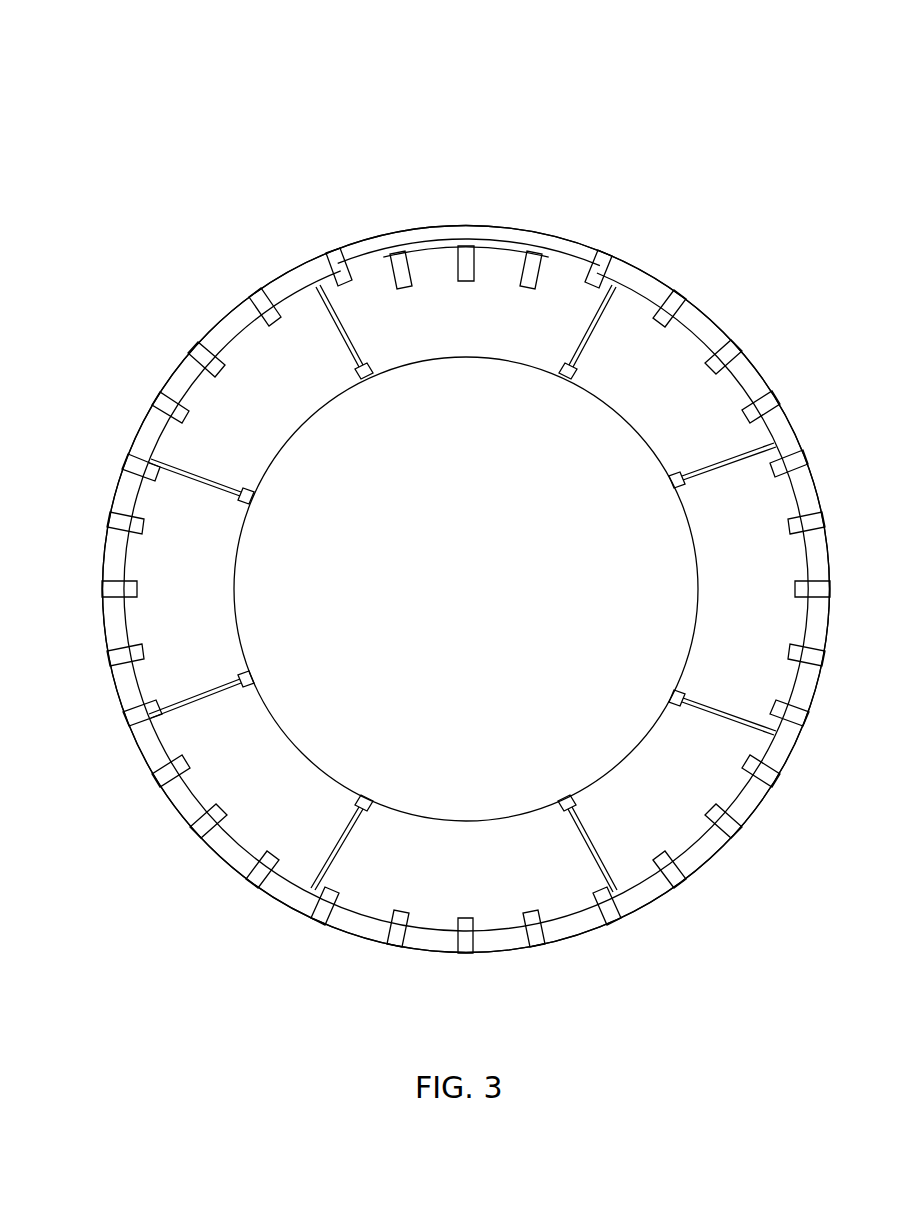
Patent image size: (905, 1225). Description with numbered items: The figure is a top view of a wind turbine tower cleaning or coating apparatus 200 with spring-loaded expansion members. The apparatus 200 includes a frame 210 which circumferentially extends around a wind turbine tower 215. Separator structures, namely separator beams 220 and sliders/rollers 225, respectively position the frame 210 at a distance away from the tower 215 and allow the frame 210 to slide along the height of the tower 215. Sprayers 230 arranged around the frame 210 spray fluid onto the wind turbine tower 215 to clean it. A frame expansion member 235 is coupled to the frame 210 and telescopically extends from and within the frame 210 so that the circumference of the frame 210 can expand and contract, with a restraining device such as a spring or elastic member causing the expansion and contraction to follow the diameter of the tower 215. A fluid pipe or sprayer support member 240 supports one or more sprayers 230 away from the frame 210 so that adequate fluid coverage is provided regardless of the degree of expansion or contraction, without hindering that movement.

The apparatus 200 is at (241, 120).
The frame 210 is at (292, 273).
The wind turbine tower 215 is at (485, 601).
The separator beams 220 is at (587, 336).
The sliders/rollers 225 is at (360, 371).
The sprayers 230 is at (198, 350).
The frame expansion member 235 is at (391, 232).
The sprayer support member 240 is at (494, 249).